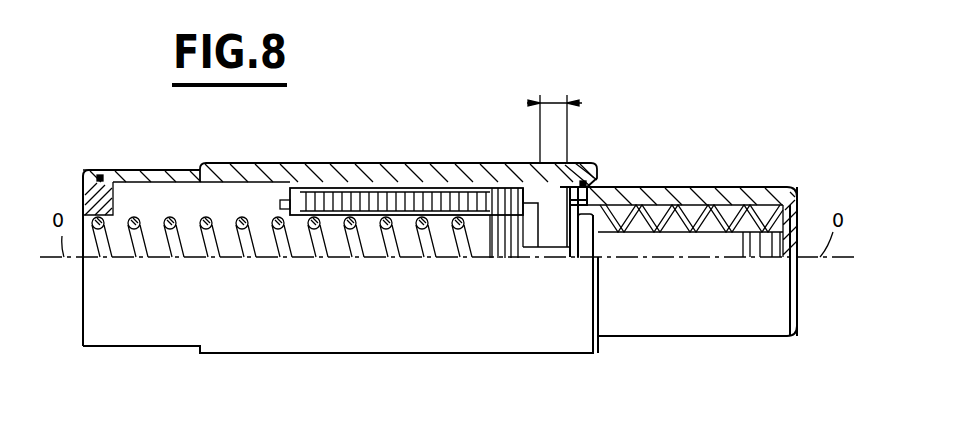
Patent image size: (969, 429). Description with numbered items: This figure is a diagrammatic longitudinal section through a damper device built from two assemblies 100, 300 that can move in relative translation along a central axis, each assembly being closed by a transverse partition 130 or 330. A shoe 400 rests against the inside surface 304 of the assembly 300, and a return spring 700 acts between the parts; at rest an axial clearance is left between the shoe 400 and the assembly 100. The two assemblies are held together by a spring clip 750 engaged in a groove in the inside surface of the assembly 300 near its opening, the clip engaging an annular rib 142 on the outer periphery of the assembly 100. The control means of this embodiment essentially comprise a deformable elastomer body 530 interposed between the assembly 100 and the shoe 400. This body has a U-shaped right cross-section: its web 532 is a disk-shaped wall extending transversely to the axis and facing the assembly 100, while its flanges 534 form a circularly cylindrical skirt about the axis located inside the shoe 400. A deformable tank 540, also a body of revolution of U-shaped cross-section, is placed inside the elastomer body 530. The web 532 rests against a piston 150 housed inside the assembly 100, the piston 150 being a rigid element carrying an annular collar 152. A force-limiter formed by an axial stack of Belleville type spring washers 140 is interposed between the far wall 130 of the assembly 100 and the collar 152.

The assembly 100 is at (738, 320).
The transverse partition 130 is at (800, 218).
The Belleville type spring washers 140 is at (737, 188).
The annular rib 142 is at (560, 182).
The piston 150 is at (653, 260).
The annular collar 152 is at (585, 238).
The assembly 300 is at (223, 330).
The inside surface 304 is at (175, 186).
The transverse partition 330 is at (83, 186).
The shoe 400 is at (424, 190).
The deformable elastomer body 530 is at (493, 260).
The web 532 is at (510, 260).
The flanges 534 is at (348, 193).
The deformable tank 540 is at (410, 216).
The return spring 700 is at (302, 242).
The spring clip 750 is at (588, 182).